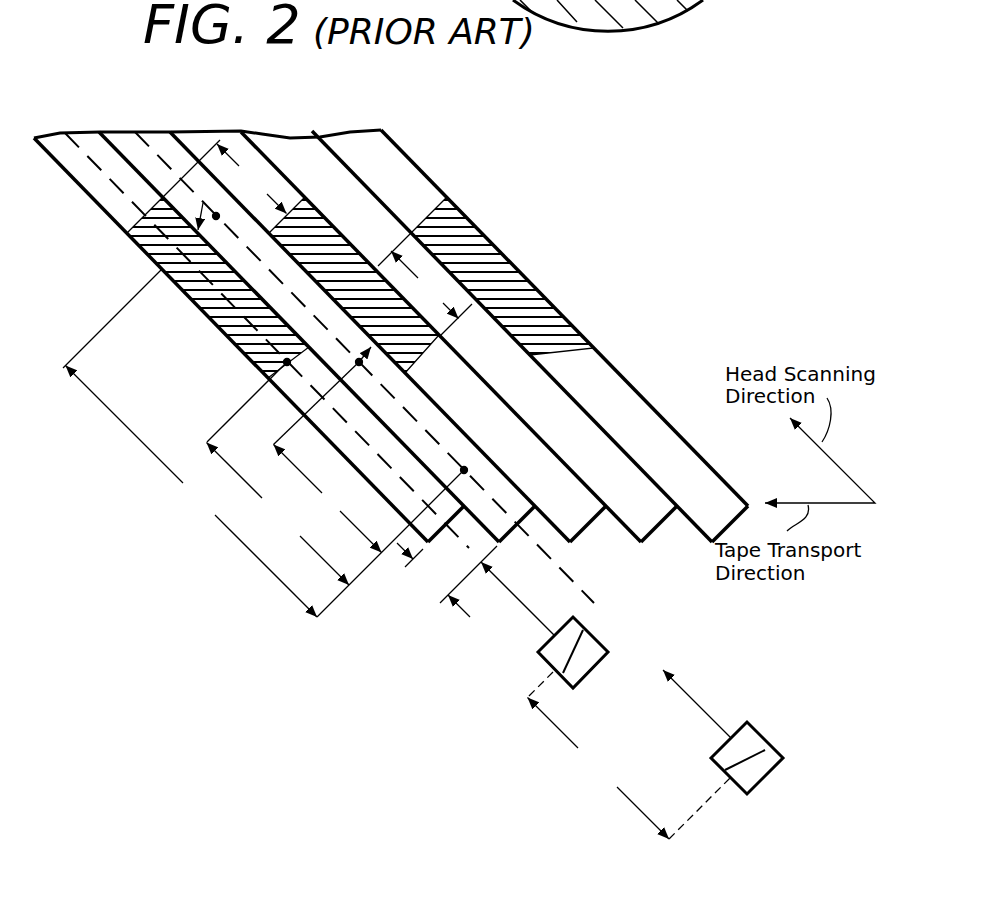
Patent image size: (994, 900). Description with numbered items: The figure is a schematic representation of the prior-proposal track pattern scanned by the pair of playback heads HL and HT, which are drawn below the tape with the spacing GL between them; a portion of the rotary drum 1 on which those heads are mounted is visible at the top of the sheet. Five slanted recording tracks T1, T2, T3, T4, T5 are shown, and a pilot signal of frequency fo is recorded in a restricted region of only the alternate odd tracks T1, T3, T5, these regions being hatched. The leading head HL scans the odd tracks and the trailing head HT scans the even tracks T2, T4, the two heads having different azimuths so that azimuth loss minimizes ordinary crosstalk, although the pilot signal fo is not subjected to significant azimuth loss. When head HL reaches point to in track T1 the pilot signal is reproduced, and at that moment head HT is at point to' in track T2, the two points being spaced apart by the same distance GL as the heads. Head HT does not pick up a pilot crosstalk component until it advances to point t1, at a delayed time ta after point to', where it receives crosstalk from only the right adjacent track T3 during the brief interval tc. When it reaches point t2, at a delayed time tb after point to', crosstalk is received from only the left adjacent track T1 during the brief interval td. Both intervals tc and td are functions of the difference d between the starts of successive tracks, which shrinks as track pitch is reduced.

The odd track T1 is at (72, 130).
The even track T2 is at (133, 130).
The odd track T3 is at (207, 132).
The even track T4 is at (288, 135).
The odd track T5 is at (355, 130).
The pilot signal frequency fo is at (355, 287).
The detection interval for left adjacent track td is at (225, 177).
The point t2 is at (216, 216).
The detection interval for right adjacent track tc is at (425, 285).
The point t0 to is at (249, 401).
The point t1 is at (361, 364).
The point t'0 to' is at (418, 521).
The delayed time tb is at (190, 443).
The head spacing GL is at (469, 641).
The delayed time ta is at (328, 499).
The difference between start of successive tracks d is at (447, 580).
The leading head HL is at (600, 666).
The trailing head HT is at (770, 783).
The rotary drum 1 is at (760, 0).